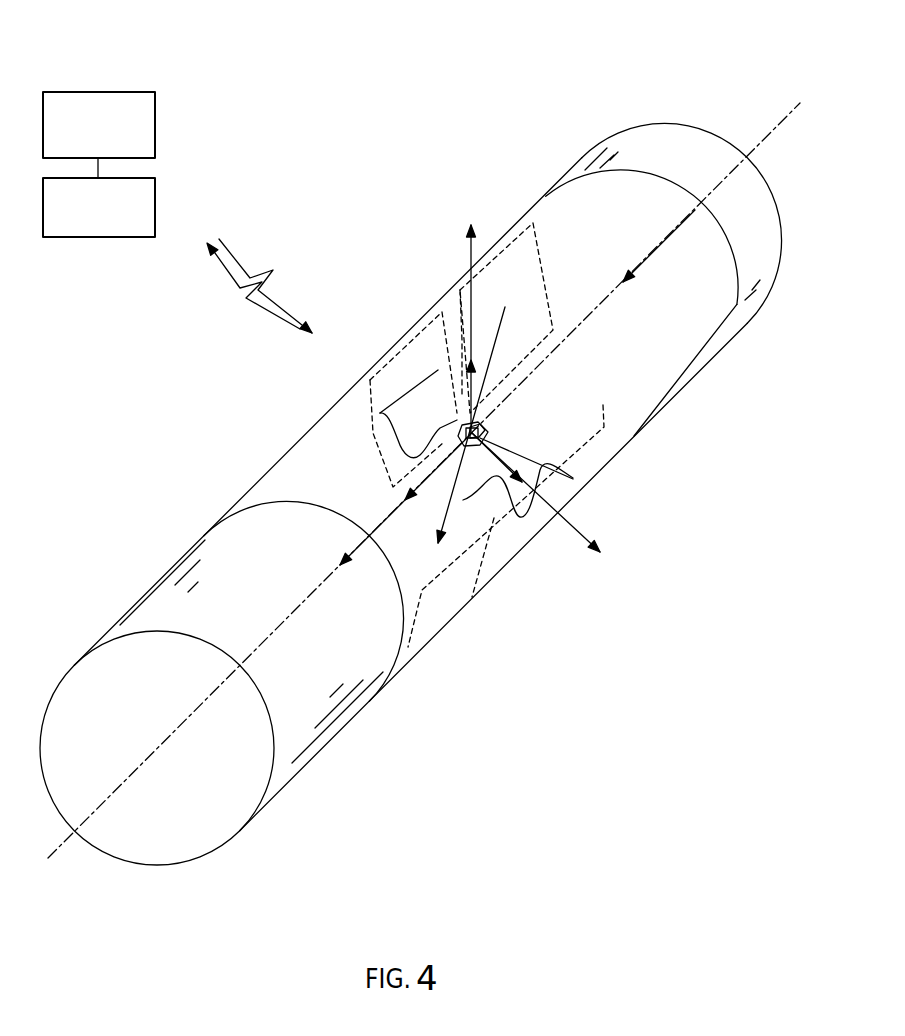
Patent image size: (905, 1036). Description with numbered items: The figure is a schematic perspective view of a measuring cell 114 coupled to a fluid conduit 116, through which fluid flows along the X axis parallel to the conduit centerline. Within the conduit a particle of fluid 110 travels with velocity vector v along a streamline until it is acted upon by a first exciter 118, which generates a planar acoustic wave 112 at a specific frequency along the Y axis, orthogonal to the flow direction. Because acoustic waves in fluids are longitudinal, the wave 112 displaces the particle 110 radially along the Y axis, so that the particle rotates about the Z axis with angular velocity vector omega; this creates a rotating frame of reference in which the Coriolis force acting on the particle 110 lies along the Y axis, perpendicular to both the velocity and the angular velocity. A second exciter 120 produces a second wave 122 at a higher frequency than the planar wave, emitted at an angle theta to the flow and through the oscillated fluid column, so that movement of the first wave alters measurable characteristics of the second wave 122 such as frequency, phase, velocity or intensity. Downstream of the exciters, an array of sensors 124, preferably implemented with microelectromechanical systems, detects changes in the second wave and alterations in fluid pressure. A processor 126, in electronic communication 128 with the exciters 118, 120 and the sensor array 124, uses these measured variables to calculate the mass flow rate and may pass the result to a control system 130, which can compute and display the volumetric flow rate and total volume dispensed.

The particle of fluid 110 is at (488, 437).
The planar acoustic wave 112 is at (487, 427).
The measuring cell 114 is at (737, 305).
The fluid conduit 116 is at (718, 118).
The first exciter 118 is at (412, 360).
The second exciter 120 is at (518, 250).
The second wave 122 is at (500, 330).
The array of sensors 124 is at (445, 602).
The processor 126 is at (155, 204).
The electronic communication 128 is at (263, 268).
The control system 130 is at (155, 124).